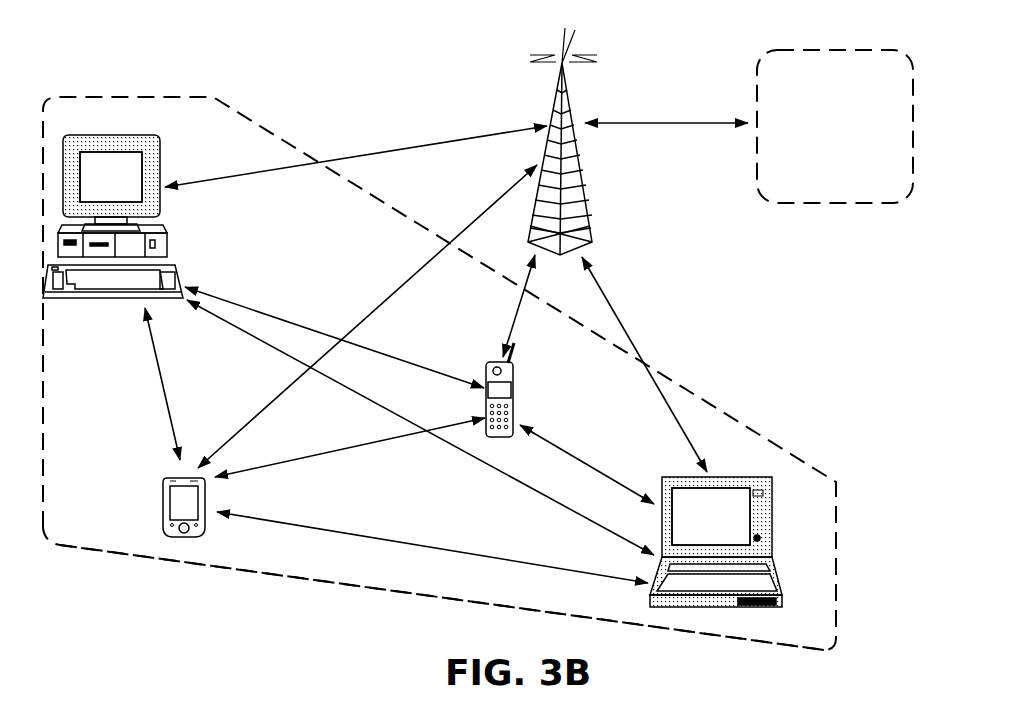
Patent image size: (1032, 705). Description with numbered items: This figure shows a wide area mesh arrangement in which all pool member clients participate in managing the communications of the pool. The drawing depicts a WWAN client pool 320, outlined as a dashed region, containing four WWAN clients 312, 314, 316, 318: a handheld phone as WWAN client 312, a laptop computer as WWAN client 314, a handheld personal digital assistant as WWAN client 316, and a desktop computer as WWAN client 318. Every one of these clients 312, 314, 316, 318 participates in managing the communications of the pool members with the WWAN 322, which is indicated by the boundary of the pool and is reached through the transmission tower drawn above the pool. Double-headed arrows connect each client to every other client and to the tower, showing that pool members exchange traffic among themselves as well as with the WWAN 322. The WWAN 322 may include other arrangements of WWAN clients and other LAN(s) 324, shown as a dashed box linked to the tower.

The WWAN client 312 is at (520, 390).
The WWAN client 314 is at (716, 532).
The WWAN client 316 is at (171, 497).
The WWAN client 318 is at (113, 206).
The WWAN client pool 320 is at (748, 423).
The WWAN 322 is at (177, 580).
The LAN(s) 324 is at (819, 46).